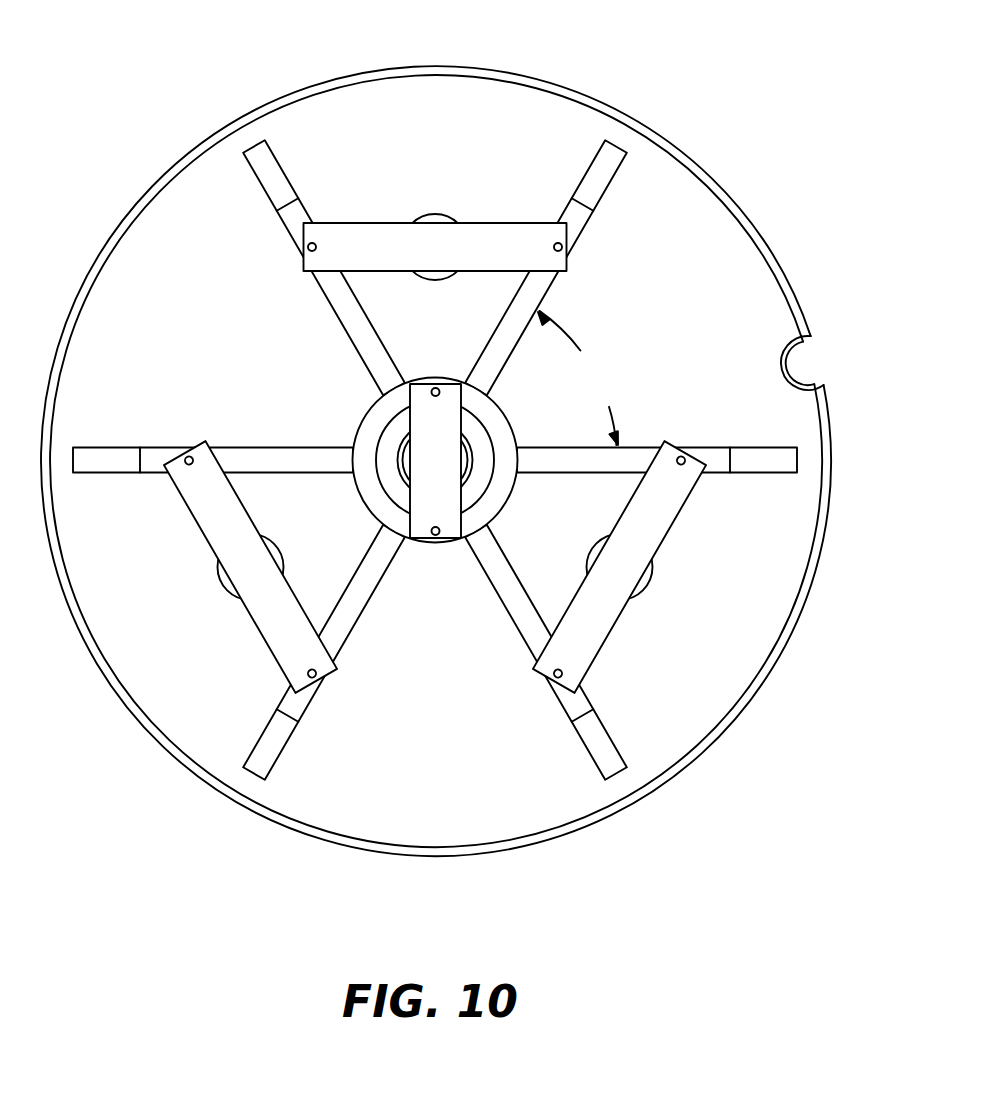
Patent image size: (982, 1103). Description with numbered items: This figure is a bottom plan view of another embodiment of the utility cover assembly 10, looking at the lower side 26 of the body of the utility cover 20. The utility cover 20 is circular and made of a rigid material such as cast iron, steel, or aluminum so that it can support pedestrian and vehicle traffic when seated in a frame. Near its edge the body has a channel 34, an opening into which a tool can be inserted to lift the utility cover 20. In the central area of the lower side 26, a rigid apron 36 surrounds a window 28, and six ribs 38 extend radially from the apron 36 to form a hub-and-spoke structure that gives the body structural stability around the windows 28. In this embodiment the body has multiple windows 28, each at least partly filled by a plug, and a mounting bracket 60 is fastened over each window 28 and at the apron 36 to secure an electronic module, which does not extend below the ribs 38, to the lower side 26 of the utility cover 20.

The utility cover assembly 10 is at (70, 94).
The utility cover 20 is at (777, 246).
The lower side 26 is at (380, 810).
The window 28 is at (432, 206).
The channel 34 is at (808, 360).
The rigid apron 36 is at (362, 427).
The ribs 38 is at (587, 177).
The mounting bracket 60 is at (440, 260).